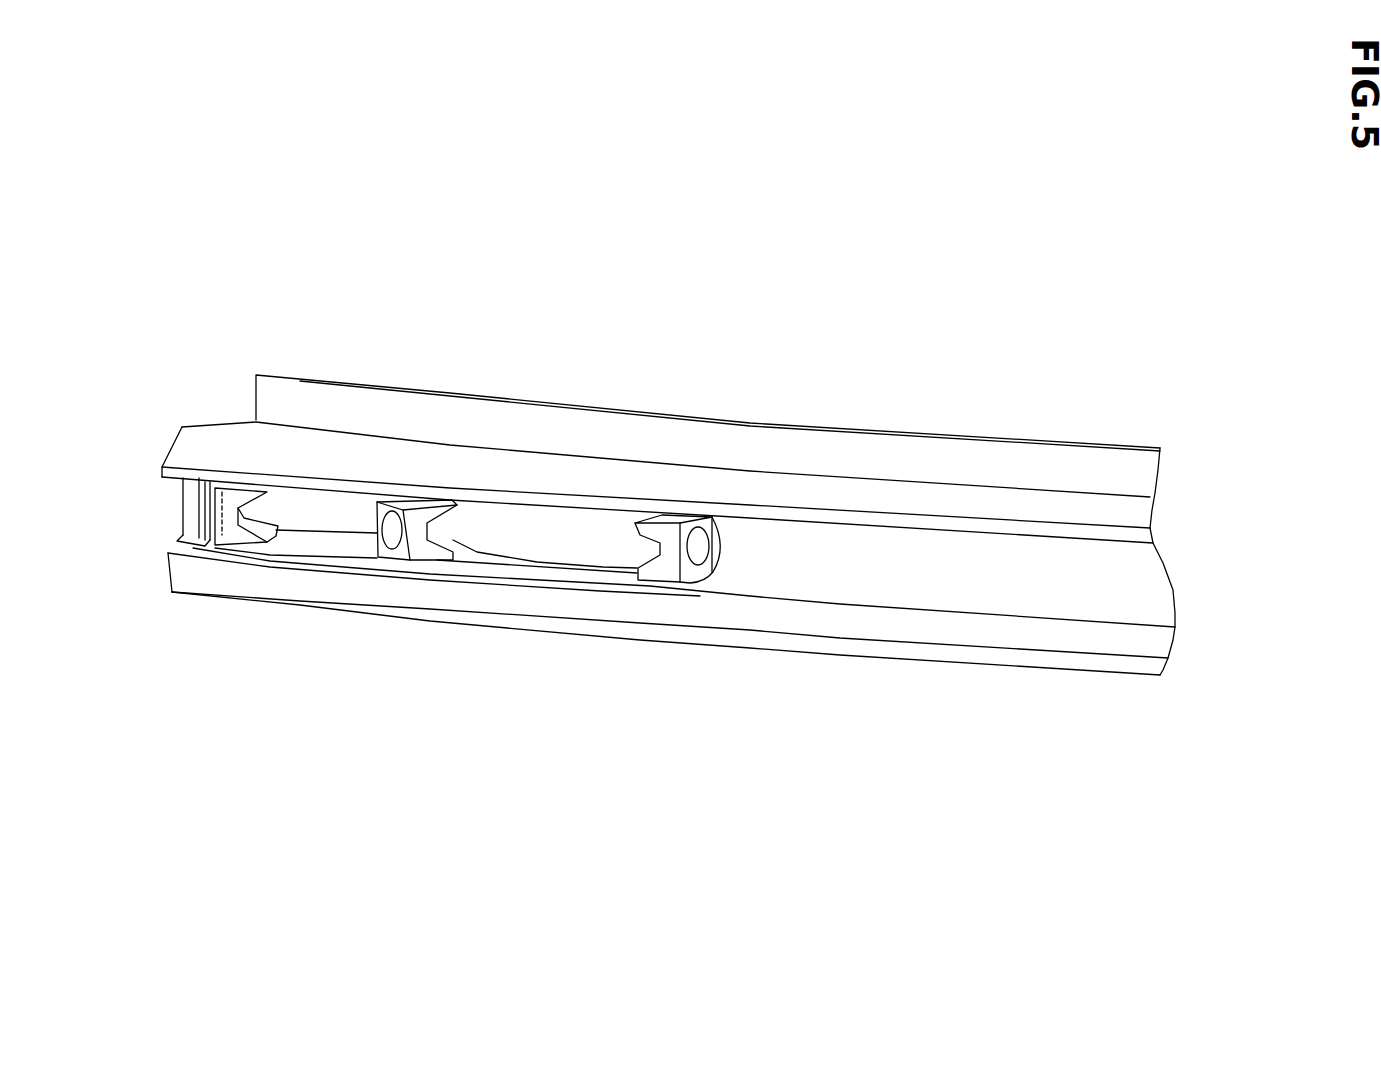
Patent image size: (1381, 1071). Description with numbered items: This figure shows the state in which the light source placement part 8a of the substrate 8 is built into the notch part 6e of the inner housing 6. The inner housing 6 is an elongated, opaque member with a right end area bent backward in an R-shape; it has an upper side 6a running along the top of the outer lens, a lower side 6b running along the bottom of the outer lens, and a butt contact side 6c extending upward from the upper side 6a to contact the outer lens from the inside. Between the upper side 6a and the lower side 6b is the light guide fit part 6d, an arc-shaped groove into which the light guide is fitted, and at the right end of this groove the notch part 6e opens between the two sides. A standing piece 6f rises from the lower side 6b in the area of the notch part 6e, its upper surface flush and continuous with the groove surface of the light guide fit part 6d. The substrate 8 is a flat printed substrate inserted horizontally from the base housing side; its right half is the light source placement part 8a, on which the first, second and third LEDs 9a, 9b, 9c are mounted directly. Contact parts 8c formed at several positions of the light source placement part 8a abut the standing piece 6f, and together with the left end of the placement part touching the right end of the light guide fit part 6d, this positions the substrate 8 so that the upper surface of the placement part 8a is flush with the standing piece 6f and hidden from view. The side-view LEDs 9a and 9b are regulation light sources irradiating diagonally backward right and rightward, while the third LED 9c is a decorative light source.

The inner housing 6 is at (820, 443).
The upper side 6a is at (222, 447).
The lower side 6b is at (522, 607).
The butt contact side 6c is at (556, 430).
The light guide fit part 6d is at (942, 568).
The notch part 6e is at (572, 528).
The standing piece 6f is at (459, 578).
The substrate 8 is at (472, 556).
The light source placement part 8a is at (305, 543).
The contact part 8c is at (215, 546).
The first LED 9a is at (213, 514).
The second LED 9b is at (392, 532).
The third LED 9c is at (703, 543).